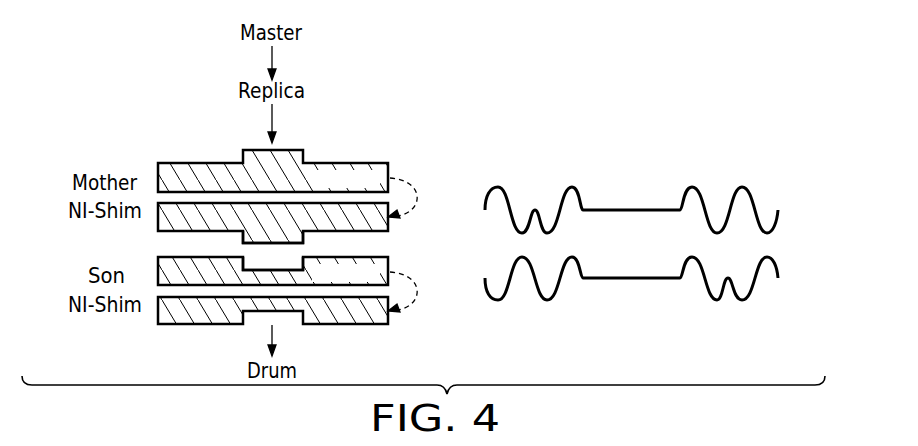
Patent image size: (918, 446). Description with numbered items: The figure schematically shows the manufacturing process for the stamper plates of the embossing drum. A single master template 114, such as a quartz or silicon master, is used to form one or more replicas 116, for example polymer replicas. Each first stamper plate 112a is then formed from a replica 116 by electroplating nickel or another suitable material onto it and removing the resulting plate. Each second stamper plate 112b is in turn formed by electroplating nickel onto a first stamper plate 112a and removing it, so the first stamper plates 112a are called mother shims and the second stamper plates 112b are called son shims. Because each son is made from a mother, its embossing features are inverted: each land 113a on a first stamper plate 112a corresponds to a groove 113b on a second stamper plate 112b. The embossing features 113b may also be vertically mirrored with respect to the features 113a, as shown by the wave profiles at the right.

The master template 114 is at (235, 33).
The replica 116 is at (235, 91).
The first stamper plate 112a is at (157, 218).
The second stamper plate 112b is at (157, 272).
The land 113a is at (310, 237).
The groove 113b is at (262, 261).